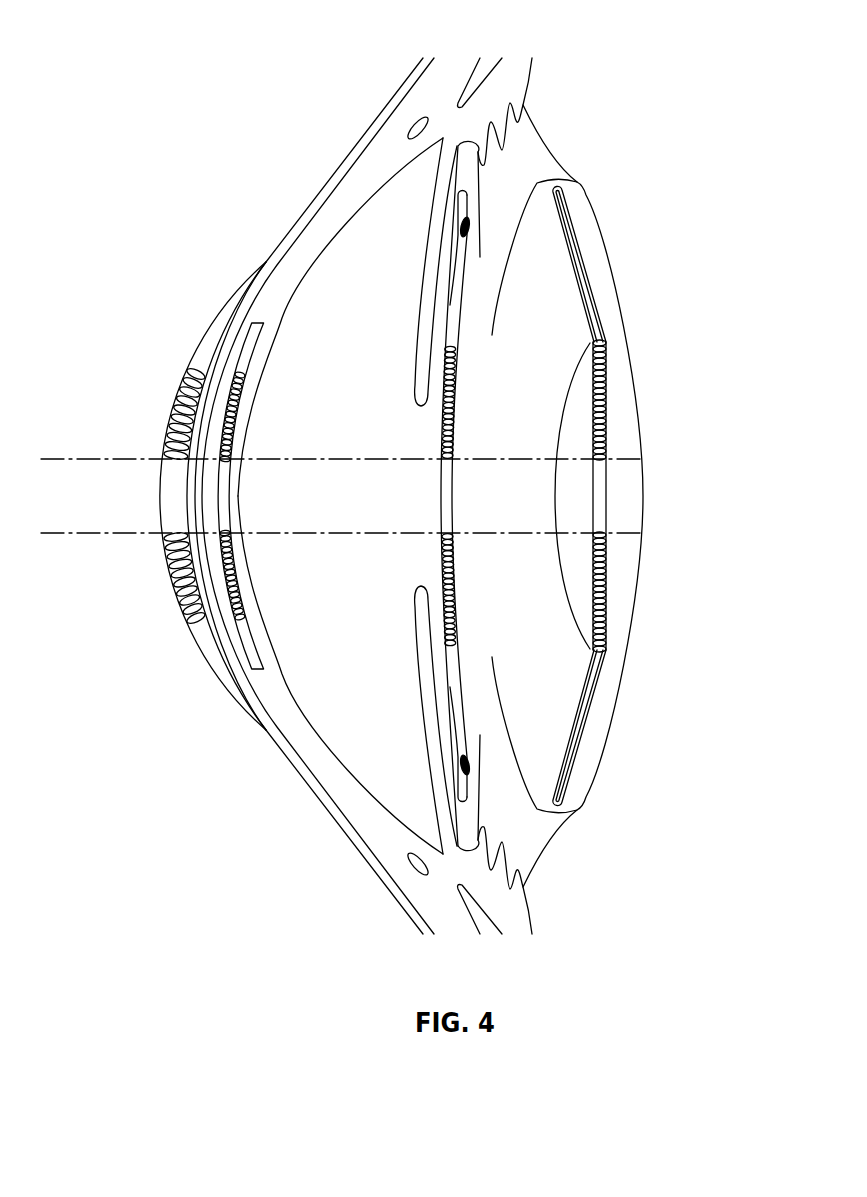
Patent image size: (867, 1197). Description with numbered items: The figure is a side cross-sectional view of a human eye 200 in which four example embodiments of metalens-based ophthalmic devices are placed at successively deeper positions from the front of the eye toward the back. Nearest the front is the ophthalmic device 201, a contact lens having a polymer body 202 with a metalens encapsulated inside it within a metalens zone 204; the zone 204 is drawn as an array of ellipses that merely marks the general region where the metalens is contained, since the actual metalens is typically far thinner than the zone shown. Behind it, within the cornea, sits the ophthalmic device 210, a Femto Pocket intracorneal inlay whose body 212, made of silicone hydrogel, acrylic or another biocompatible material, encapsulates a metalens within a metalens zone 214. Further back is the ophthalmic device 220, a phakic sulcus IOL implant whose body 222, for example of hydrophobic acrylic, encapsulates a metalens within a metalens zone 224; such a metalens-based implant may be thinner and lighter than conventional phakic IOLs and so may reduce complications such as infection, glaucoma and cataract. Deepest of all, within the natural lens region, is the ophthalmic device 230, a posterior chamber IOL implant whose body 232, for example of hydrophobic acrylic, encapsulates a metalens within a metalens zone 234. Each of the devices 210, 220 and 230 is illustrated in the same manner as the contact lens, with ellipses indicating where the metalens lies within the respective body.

The human eye 200 is at (293, 191).
The ophthalmic device 201 is at (200, 340).
The polymer body 202 is at (200, 358).
The metalens zone 204 is at (170, 567).
The ophthalmic device 210 is at (264, 337).
The body 212 is at (247, 362).
The metalens zone 214 is at (236, 433).
The ophthalmic device 220 is at (463, 278).
The body 222 is at (450, 323).
The metalens zone 224 is at (455, 573).
The ophthalmic device 230 is at (622, 348).
The body 232 is at (618, 387).
The metalens zone 234 is at (614, 565).